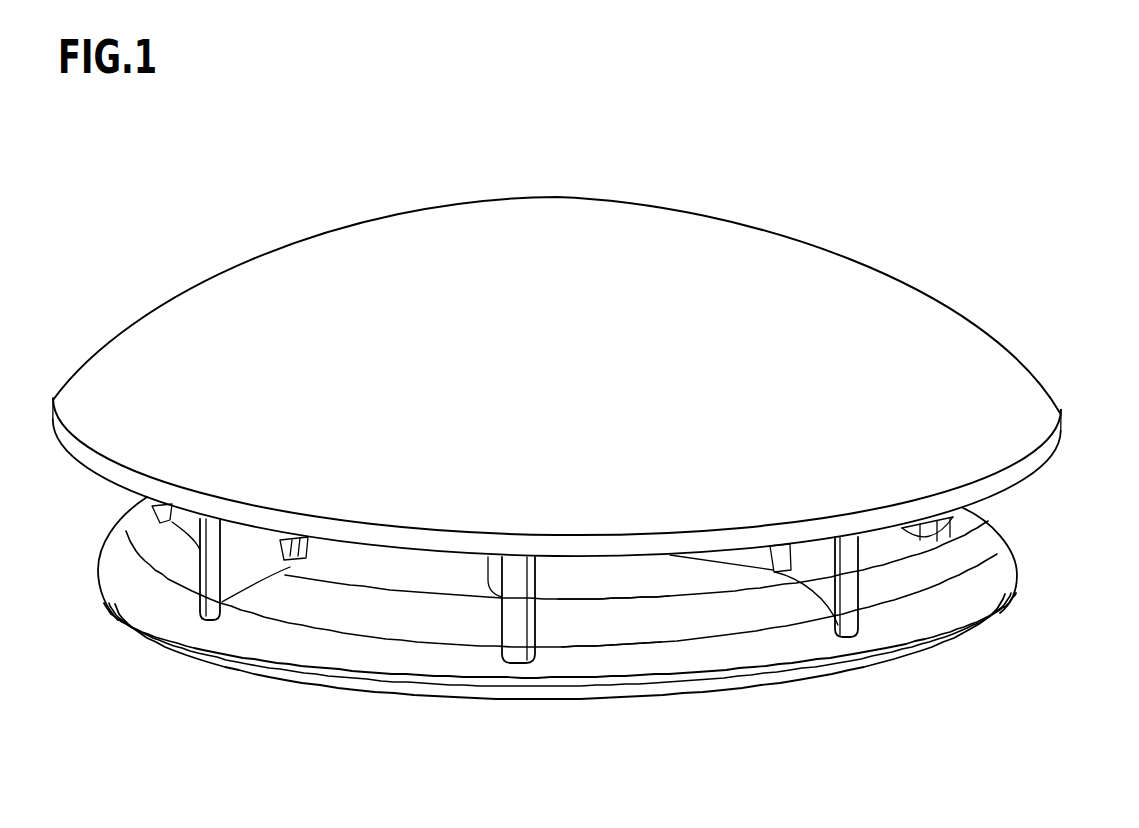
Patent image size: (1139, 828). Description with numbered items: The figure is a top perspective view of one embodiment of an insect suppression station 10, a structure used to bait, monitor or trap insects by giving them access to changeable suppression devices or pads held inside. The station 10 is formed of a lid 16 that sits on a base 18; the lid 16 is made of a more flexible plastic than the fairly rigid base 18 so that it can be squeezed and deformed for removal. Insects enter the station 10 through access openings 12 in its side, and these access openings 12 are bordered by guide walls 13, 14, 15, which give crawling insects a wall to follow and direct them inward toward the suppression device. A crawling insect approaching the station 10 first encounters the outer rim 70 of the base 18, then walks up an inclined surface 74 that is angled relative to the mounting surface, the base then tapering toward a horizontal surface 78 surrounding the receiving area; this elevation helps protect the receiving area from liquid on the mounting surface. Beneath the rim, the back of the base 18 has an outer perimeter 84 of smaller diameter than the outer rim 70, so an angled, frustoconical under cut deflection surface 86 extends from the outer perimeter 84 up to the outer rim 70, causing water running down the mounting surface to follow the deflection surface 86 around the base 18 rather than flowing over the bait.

The insect suppression station 10 is at (845, 193).
The access openings 12 is at (193, 523).
The guide wall 13 is at (210, 600).
The guide wall 14 is at (513, 643).
The guide wall 15 is at (845, 606).
The lid 16 is at (966, 318).
The base 18 is at (1000, 545).
The outer rim 70 is at (1012, 585).
The inclined surface 74 is at (603, 665).
The horizontal surface 78 is at (603, 572).
The outer perimeter 84 is at (692, 697).
The under cut deflection surface 86 is at (727, 688).